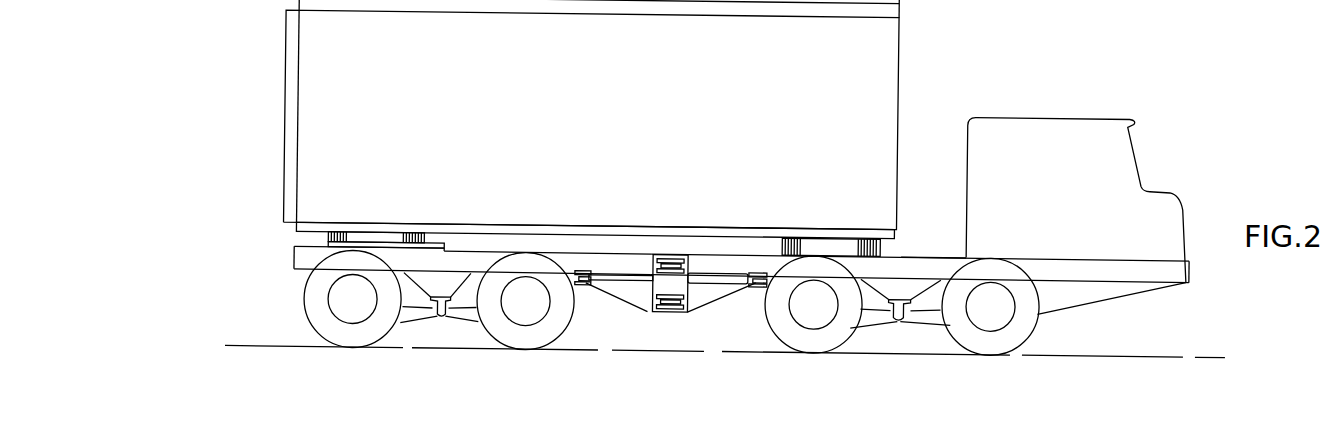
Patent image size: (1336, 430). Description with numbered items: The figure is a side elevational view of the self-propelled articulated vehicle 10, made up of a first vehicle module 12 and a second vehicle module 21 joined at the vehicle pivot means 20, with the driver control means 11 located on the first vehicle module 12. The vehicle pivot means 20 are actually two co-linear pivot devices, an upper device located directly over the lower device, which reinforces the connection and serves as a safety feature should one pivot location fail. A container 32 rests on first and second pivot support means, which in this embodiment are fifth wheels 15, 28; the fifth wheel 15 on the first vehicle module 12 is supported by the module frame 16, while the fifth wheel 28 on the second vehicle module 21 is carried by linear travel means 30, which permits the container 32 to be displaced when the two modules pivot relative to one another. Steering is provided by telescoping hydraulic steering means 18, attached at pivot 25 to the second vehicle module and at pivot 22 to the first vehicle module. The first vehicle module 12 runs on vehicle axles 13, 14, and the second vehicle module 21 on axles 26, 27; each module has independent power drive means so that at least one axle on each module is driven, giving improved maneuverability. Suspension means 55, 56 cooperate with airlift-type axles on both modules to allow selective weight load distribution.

The self-propelled articulated vehicle 10 is at (702, 179).
The driver control portion 11 is at (1113, 154).
The first vehicle module 12 is at (910, 251).
The vehicle axle 13 is at (990, 298).
The vehicle axle 14 is at (813, 297).
The fifth wheel 15 is at (833, 244).
The module frame 16 is at (946, 254).
The telescoping hydraulic steering means 18 is at (652, 266).
The vehicle pivot means 20 is at (672, 257).
The second vehicle module 21 is at (609, 244).
The pivot 22 is at (750, 282).
The pivot 25 is at (578, 267).
The vehicle axle 26 is at (523, 298).
The vehicle axle 27 is at (352, 299).
The fifth wheel 28 is at (365, 241).
The linear travel means 30 is at (315, 249).
The container 32 is at (315, 87).
The suspension means 55 is at (455, 314).
The suspension means 56 is at (868, 315).